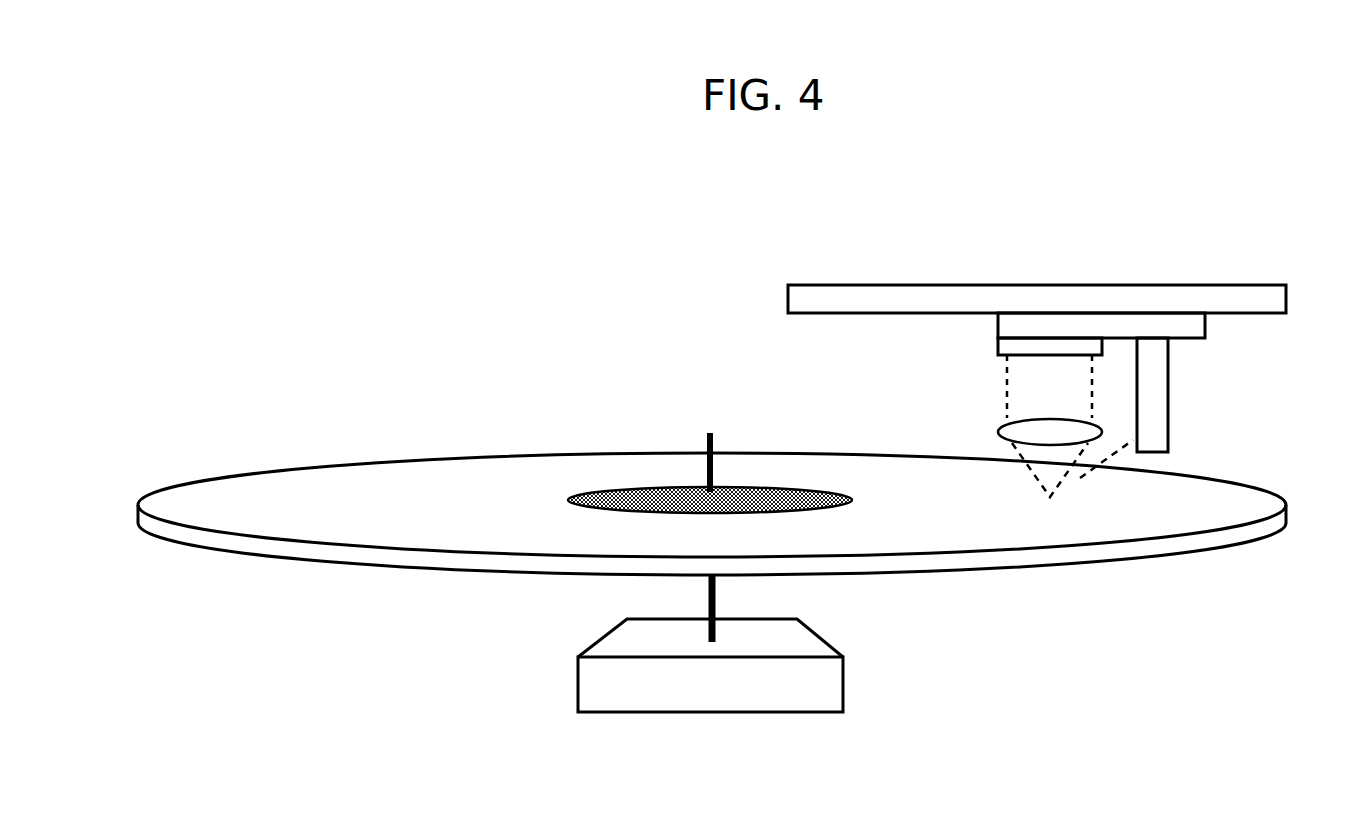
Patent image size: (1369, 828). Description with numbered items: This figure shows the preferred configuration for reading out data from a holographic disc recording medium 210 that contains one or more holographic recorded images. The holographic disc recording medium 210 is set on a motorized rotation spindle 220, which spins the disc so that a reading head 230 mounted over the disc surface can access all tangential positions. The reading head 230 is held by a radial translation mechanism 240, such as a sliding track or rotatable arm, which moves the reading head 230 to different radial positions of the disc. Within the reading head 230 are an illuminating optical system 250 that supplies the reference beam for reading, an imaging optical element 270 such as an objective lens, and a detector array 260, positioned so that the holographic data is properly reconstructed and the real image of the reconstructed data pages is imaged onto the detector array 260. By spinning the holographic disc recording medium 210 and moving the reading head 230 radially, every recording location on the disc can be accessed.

The holographic disc recording medium 210 is at (349, 503).
The motorized rotation spindle 220 is at (843, 675).
The reading head 230 is at (1205, 338).
The radial translation mechanism 240 is at (995, 288).
The illuminating optical system 250 is at (1168, 410).
The detector array 260 is at (998, 352).
The imaging optical element 270 is at (1002, 432).